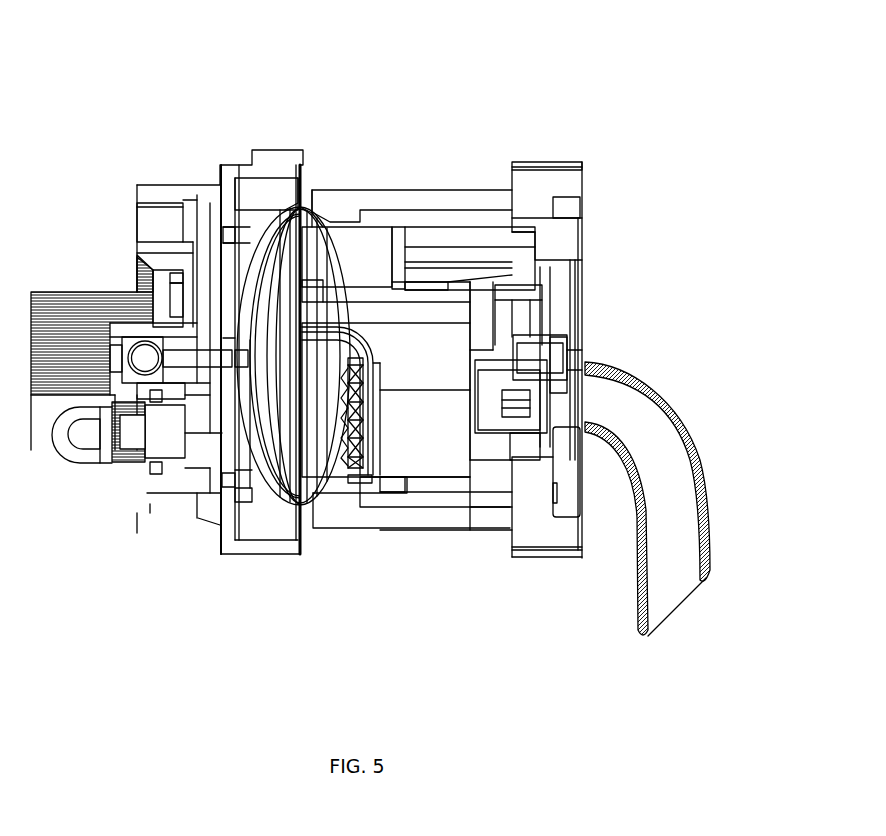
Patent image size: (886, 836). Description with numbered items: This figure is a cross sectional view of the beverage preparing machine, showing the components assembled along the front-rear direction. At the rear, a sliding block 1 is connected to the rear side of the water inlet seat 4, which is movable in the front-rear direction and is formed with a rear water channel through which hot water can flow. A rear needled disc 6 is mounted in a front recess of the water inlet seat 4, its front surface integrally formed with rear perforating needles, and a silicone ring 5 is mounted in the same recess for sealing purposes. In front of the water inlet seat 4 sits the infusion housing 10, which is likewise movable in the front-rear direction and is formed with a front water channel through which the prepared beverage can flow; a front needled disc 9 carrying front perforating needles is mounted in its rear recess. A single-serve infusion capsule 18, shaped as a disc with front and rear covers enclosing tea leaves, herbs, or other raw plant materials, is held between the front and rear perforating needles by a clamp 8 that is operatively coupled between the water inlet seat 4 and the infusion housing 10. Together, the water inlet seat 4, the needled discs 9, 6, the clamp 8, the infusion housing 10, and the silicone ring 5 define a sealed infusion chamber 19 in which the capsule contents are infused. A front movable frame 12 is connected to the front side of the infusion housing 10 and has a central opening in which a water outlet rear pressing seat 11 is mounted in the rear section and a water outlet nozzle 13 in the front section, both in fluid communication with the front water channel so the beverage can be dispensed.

The sliding block 1 is at (153, 183).
The water inlet seat 4 is at (229, 162).
The silicone ring 5 is at (277, 192).
The rear needled disc 6 is at (246, 490).
The clamp 8 is at (354, 248).
The front needled disc 9 is at (358, 466).
The infusion housing 10 is at (461, 183).
The water outlet rear pressing seat 11 is at (528, 440).
The front movable frame 12 is at (566, 158).
The water outlet nozzle 13 is at (706, 475).
The single-serve infusion capsule 18 is at (292, 488).
The sealed infusion chamber 19 is at (321, 500).